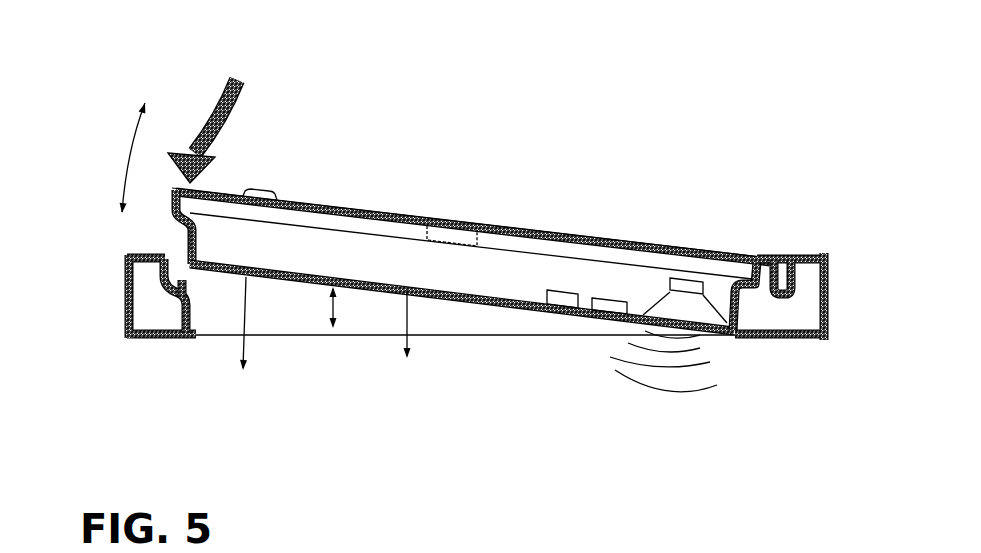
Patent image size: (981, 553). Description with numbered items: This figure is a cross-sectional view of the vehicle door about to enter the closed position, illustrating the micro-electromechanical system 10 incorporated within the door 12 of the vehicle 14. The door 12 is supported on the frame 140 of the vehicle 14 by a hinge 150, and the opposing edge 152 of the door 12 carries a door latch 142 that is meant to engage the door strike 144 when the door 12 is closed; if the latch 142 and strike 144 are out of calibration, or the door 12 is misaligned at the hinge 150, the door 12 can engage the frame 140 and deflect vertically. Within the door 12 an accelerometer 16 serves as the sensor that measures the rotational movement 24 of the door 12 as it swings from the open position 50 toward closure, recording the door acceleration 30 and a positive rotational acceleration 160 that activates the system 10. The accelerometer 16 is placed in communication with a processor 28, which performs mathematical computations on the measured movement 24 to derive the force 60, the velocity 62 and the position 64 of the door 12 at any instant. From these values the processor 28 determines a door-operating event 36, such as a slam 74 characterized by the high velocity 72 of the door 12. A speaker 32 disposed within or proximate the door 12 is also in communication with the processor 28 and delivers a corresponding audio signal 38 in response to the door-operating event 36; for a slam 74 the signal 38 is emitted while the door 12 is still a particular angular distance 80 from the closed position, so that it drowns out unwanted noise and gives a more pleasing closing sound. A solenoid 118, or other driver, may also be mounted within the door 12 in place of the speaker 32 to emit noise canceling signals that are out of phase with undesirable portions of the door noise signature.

The micro-electromechanical system 10 is at (517, 348).
The door 12 is at (368, 212).
The vehicle 14 is at (799, 244).
The accelerometer 16 is at (600, 313).
The rotational movement 24 is at (122, 167).
The processor 28 is at (565, 300).
The door acceleration 30 is at (319, 198).
The speaker 32 is at (688, 300).
The door-operating event 36 is at (550, 190).
The audio signal 38 is at (718, 373).
The open position 50 is at (686, 207).
The force 60 is at (218, 88).
The velocity 62 is at (245, 310).
The position 64 is at (118, 233).
The high velocity 72 is at (193, 100).
The slam 74 is at (419, 207).
The angular distance 80 is at (334, 303).
The solenoid 118 is at (459, 208).
The frame 140 is at (178, 282).
The door latch 142 is at (188, 226).
The door strike 144 is at (197, 288).
The hinge 150 is at (788, 281).
The opposing edge 152 is at (173, 193).
The positive rotational acceleration 160 is at (408, 313).